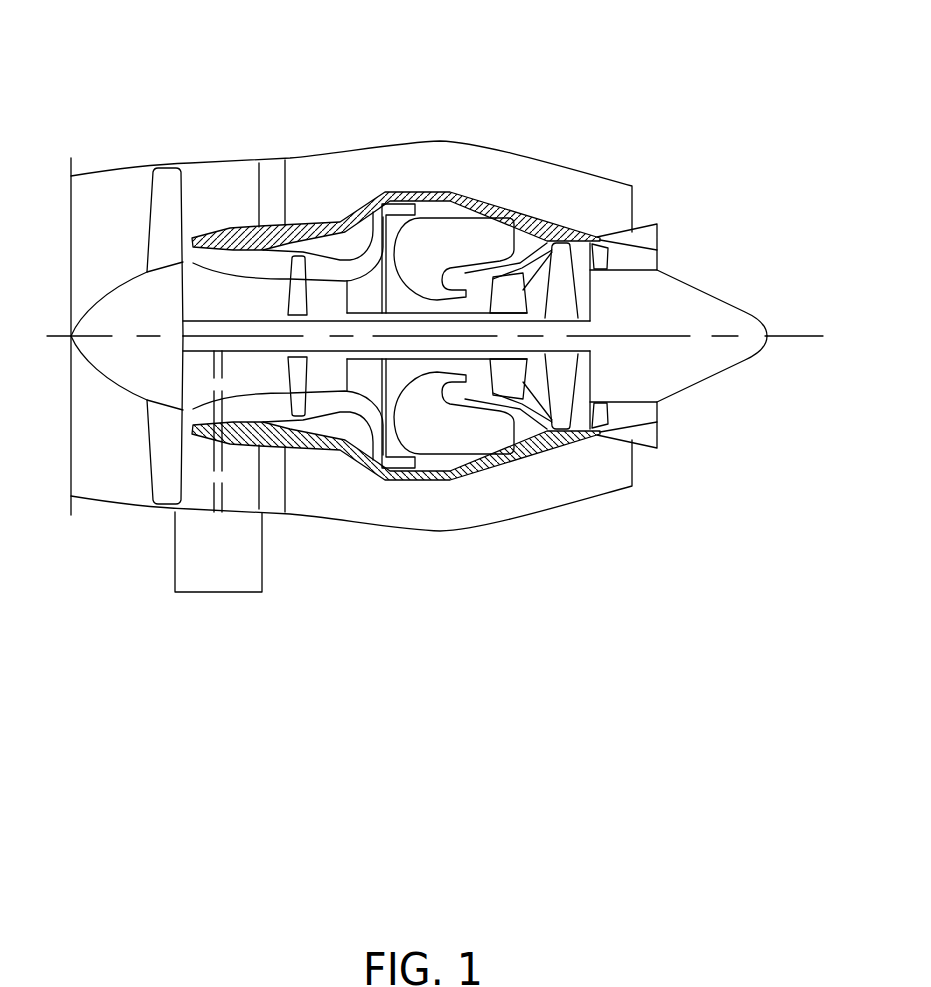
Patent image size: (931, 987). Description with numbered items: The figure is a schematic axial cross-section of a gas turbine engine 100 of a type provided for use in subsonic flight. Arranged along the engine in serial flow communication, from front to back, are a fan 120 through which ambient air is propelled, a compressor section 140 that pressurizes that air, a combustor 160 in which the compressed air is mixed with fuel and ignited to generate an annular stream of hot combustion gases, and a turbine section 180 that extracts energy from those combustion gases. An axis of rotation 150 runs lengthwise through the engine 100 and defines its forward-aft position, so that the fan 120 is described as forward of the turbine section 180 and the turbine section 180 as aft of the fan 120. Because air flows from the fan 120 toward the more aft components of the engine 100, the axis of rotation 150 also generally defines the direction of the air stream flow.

The gas turbine engine 100 is at (548, 112).
The fan 120 is at (162, 447).
The compressor section 140 is at (334, 273).
The combustor 160 is at (455, 237).
The turbine section 180 is at (535, 432).
The axis of rotation 150 is at (778, 330).